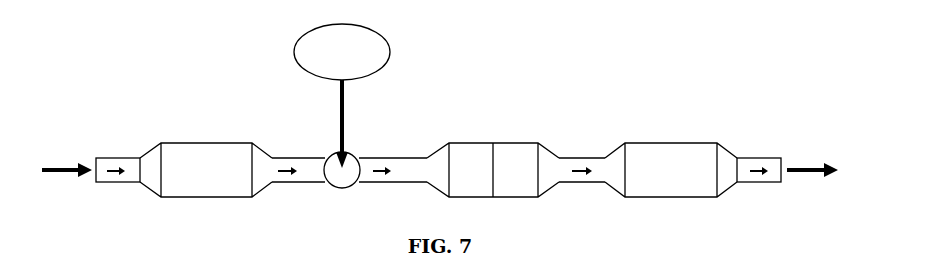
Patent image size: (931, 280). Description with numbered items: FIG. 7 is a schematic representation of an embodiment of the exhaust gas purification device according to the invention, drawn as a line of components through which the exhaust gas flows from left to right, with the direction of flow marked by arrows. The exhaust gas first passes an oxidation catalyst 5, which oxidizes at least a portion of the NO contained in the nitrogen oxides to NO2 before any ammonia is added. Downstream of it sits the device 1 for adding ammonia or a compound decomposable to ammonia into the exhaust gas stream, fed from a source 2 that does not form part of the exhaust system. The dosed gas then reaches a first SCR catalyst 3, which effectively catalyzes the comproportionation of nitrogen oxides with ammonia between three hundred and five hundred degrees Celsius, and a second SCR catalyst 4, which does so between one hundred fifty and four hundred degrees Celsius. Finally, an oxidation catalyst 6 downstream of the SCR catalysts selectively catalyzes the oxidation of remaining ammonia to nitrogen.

The device for adding ammonia 1 is at (342, 170).
The source 2 is at (342, 96).
The first SCR catalyst 3 is at (460, 170).
The second SCR catalyst 4 is at (526, 170).
The oxidation catalyst 5 is at (206, 170).
The oxidation catalyst 6 is at (671, 170).